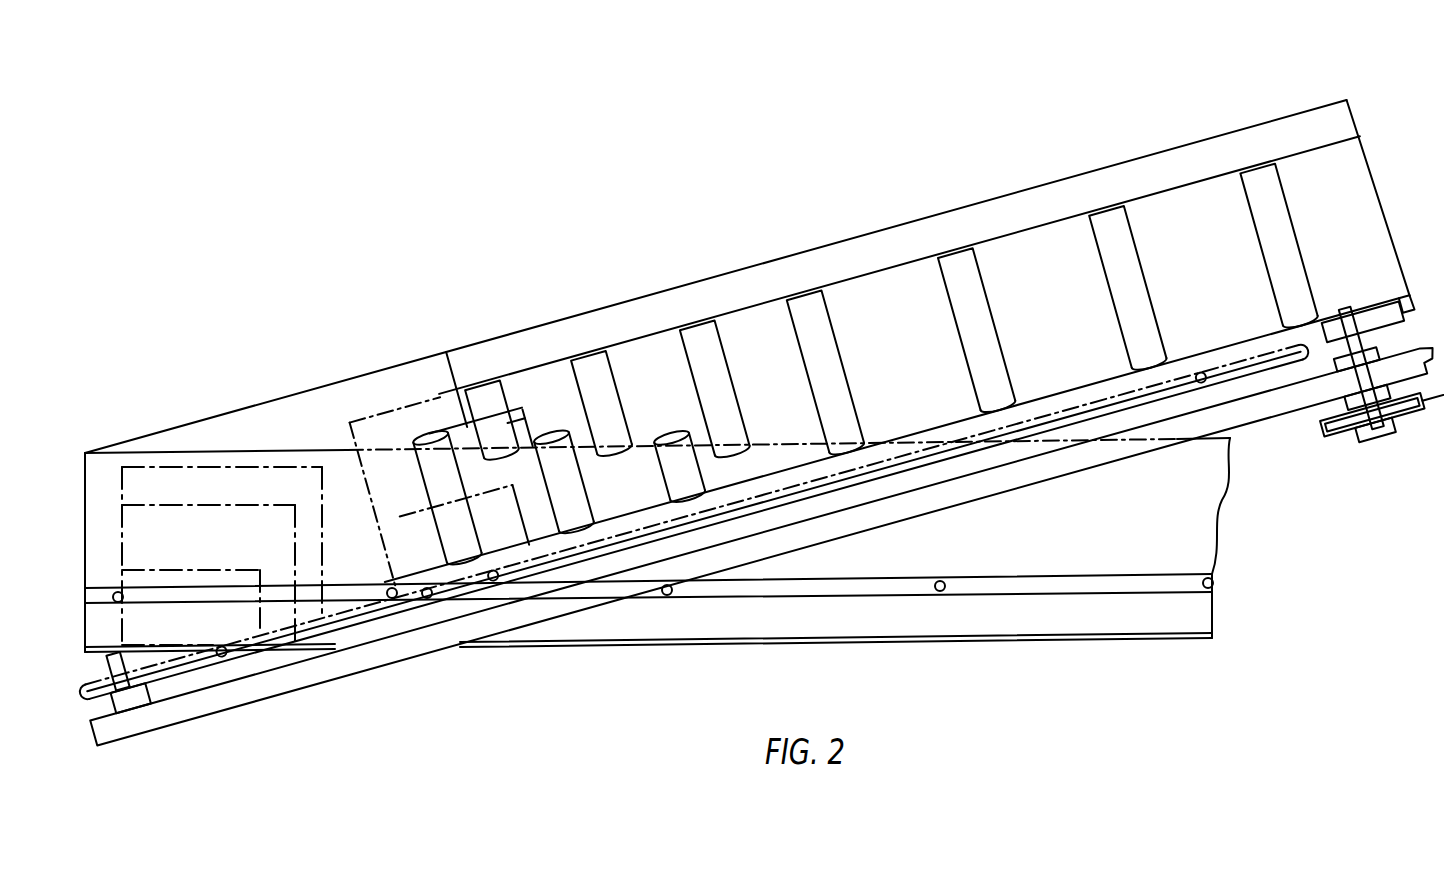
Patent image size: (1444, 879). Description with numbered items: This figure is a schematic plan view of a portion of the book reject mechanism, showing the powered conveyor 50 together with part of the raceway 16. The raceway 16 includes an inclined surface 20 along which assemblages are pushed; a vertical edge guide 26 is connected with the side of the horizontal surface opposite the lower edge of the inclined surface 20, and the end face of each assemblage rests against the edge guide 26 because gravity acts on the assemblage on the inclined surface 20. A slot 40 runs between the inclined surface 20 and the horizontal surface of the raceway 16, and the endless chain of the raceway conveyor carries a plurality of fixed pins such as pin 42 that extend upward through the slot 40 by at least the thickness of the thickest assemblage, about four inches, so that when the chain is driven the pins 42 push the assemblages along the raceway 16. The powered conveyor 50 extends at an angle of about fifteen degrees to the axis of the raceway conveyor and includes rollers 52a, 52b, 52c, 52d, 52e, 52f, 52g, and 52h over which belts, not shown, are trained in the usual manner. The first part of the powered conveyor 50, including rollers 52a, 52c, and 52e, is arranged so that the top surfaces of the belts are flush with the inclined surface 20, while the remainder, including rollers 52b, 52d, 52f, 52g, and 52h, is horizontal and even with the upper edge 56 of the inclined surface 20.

The powered conveyor 50 is at (1063, 157).
The roller 52a is at (430, 436).
The roller 52b is at (490, 390).
The roller 52c is at (560, 433).
The roller 52d is at (597, 367).
The roller 52e is at (672, 428).
The roller 52f is at (705, 345).
The roller 52g is at (812, 308).
The roller 52h is at (962, 270).
The upper edge 56 is at (1062, 434).
The inclined surface 20 is at (1197, 515).
The raceway 16 is at (1222, 566).
The slot 40 is at (1160, 584).
The pin 42 is at (1212, 586).
The vertical edge guide 26 is at (1088, 640).